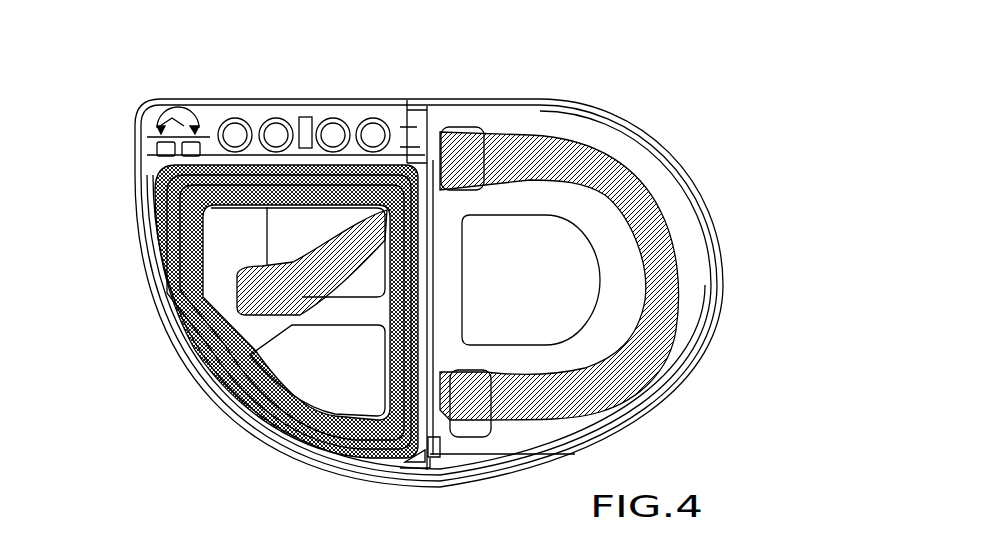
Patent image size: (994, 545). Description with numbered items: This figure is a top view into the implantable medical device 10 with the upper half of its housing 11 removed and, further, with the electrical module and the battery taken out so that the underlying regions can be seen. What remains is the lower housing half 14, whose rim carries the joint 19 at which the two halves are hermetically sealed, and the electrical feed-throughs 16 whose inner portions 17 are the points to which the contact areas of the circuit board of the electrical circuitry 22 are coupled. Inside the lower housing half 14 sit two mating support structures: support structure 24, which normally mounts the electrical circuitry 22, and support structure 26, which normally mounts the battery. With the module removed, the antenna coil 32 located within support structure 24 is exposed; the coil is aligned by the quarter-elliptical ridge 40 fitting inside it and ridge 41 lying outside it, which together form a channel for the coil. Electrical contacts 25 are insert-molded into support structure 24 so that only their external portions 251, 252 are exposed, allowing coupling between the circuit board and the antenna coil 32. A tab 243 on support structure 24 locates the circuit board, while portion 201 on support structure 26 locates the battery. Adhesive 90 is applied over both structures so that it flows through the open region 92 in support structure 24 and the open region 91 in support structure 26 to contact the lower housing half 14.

The implantable medical device 10 is at (779, 257).
The housing 11 is at (769, 299).
The lower housing half 14 is at (680, 160).
The electrical feed-throughs 16 is at (277, 128).
The inner portions of electrical feed-throughs 17 is at (387, 127).
The joint 19 is at (510, 479).
The electrical circuitry 22 is at (317, 232).
The support structure 24 is at (385, 328).
The electrical contacts 25 is at (140, 128).
The support structure 26 is at (560, 118).
The antenna coil 32 is at (232, 327).
The ridge 40 is at (354, 452).
The ridge 41 is at (272, 437).
The adhesive 90 is at (295, 340).
The open region 91 is at (640, 293).
The open region 92 is at (292, 243).
The portion 201 is at (428, 130).
The tab 243 is at (403, 133).
The external portion of contact 251 is at (168, 128).
The external portion of contact 252 is at (140, 160).